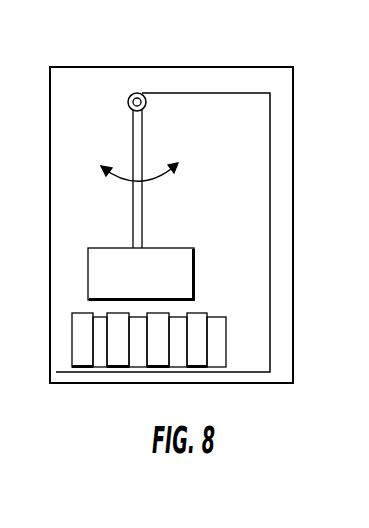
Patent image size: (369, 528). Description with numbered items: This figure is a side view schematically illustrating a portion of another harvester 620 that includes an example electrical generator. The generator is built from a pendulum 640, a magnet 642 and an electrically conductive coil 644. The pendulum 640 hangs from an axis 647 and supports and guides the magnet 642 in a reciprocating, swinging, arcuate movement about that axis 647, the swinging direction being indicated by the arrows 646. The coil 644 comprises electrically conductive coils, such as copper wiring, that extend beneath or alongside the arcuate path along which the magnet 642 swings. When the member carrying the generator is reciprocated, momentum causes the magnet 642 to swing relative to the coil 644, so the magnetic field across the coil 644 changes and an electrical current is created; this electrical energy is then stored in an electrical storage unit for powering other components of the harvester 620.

The harvester 620 is at (290, 52).
The pendulum 640 is at (231, 93).
The axis 647 is at (128, 100).
The arrows 646 is at (158, 181).
The magnet 642 is at (194, 278).
The electrically conductive coil 644 is at (226, 333).